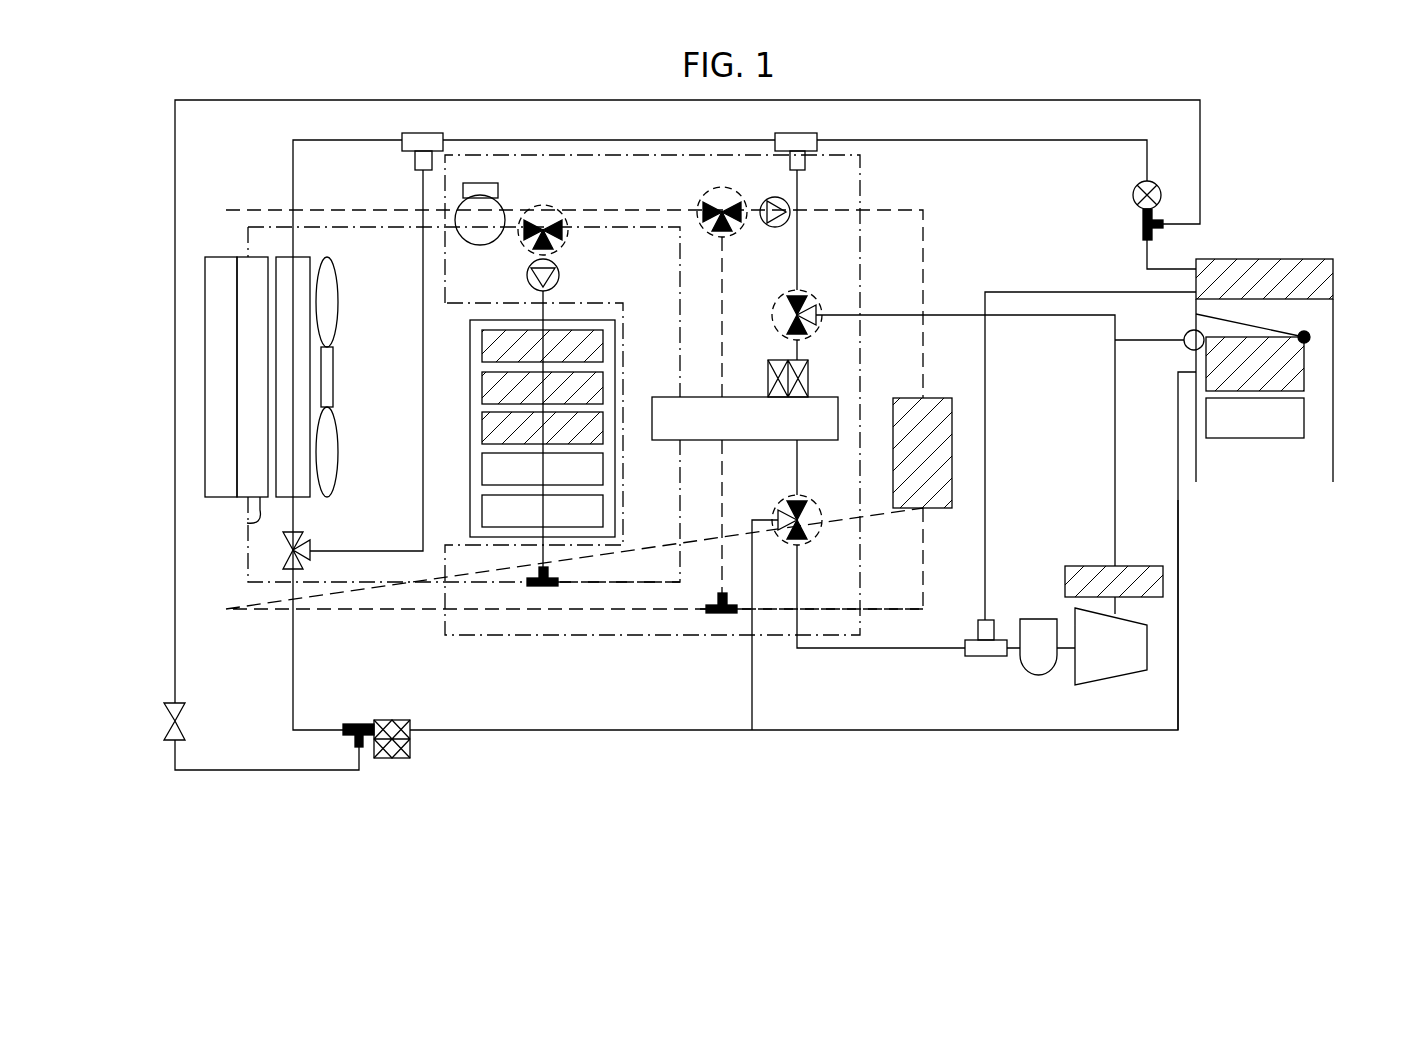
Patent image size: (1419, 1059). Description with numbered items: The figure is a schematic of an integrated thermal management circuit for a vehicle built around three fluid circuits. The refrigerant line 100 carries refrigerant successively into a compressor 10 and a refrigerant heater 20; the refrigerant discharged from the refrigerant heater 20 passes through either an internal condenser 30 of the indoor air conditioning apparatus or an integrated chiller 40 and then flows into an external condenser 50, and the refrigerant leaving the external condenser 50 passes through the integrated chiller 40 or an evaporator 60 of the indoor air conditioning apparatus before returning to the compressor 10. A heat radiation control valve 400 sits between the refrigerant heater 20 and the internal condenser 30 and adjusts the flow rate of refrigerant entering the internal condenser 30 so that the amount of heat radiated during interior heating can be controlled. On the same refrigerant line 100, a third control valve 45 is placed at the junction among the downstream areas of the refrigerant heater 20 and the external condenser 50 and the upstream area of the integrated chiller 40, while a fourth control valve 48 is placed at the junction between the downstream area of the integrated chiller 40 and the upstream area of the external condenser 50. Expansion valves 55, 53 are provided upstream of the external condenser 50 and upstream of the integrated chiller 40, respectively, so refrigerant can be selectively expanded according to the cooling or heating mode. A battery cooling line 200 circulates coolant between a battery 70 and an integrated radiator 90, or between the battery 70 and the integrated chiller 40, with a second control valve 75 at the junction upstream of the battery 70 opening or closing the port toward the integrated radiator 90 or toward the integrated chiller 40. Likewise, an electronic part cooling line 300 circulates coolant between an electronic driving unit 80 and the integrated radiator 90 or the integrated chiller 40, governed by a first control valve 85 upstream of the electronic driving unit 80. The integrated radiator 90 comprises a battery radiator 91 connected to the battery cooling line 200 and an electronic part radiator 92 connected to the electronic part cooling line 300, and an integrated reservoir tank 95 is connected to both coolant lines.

The compressor 10 is at (1147, 648).
The refrigerant heater 20 is at (1080, 566).
The internal condenser 30 is at (1304, 365).
The integrated chiller 40 is at (815, 397).
The third control valve 45 is at (808, 297).
The fourth control valve 48 is at (808, 502).
The external condenser 50 is at (310, 498).
The expansion valve 53 is at (768, 365).
The expansion valve 55 is at (410, 750).
The evaporator 60 is at (1280, 259).
The battery 70 is at (940, 398).
The second control valve 75 is at (732, 236).
The electronic driving unit 80 is at (470, 424).
The first control valve 85 is at (568, 240).
The integrated radiator 90 is at (203, 384).
The battery radiator 91 is at (205, 437).
The electronic part radiator 92 is at (247, 523).
The integrated reservoir tank 95 is at (498, 190).
The refrigerant line 100 is at (1178, 557).
The battery cooling line 200 is at (900, 612).
The electronic part cooling line 300 is at (635, 582).
The heat radiation control valve 400 is at (1189, 349).